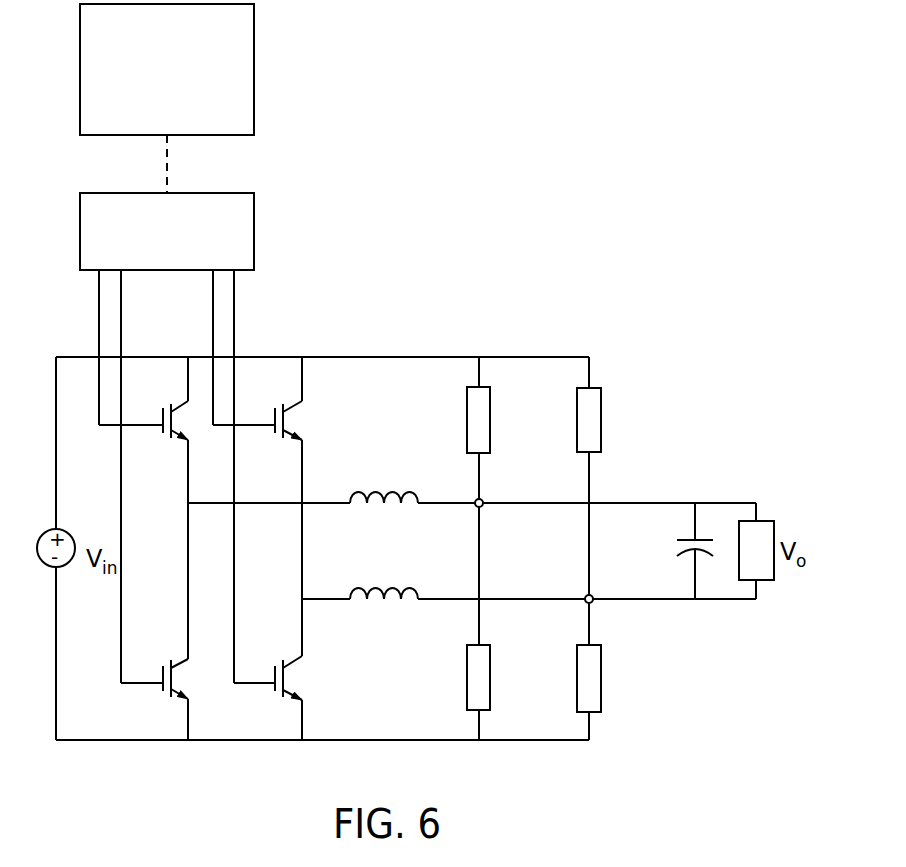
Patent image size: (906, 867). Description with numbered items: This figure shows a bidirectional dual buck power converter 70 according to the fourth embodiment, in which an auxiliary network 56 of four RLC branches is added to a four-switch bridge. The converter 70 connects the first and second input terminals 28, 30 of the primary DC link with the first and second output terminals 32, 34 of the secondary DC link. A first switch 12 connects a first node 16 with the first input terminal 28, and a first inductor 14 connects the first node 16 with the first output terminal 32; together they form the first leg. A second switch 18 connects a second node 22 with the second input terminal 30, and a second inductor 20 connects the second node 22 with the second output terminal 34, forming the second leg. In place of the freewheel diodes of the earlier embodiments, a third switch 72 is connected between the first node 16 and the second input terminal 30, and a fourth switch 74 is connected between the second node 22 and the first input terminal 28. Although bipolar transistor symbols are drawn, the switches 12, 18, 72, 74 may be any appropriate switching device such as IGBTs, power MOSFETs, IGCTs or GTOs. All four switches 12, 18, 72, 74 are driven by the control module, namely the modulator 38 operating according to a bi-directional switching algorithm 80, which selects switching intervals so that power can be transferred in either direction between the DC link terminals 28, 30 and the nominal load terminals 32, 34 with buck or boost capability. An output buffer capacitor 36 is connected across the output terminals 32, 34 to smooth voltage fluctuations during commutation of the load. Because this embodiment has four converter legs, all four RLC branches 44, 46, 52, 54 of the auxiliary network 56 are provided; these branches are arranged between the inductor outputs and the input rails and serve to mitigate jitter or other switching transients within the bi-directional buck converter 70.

The bi-directional switching algorithm 80 is at (254, 71).
The modulator 38 is at (254, 239).
The power converter 70 is at (456, 210).
The first input terminal 28 is at (56, 348).
The second input terminal 30 is at (56, 745).
The output network rail 56 is at (529, 348).
The first switch 12 is at (178, 446).
The fourth switch 74 is at (304, 423).
The third switch 72 is at (168, 648).
The second switch 18 is at (306, 681).
The first node 16 is at (188, 503).
The second node 22 is at (302, 601).
The first inductor 14 is at (414, 478).
The second inductor 20 is at (386, 571).
The RLC branch 44 is at (466, 410).
The RLC branch 54 is at (637, 408).
The RLC branch 52 is at (463, 673).
The RLC branch 46 is at (629, 657).
The output buffer capacitor 36 is at (676, 548).
The first output terminal 32 is at (756, 500).
The second output terminal 34 is at (756, 601).